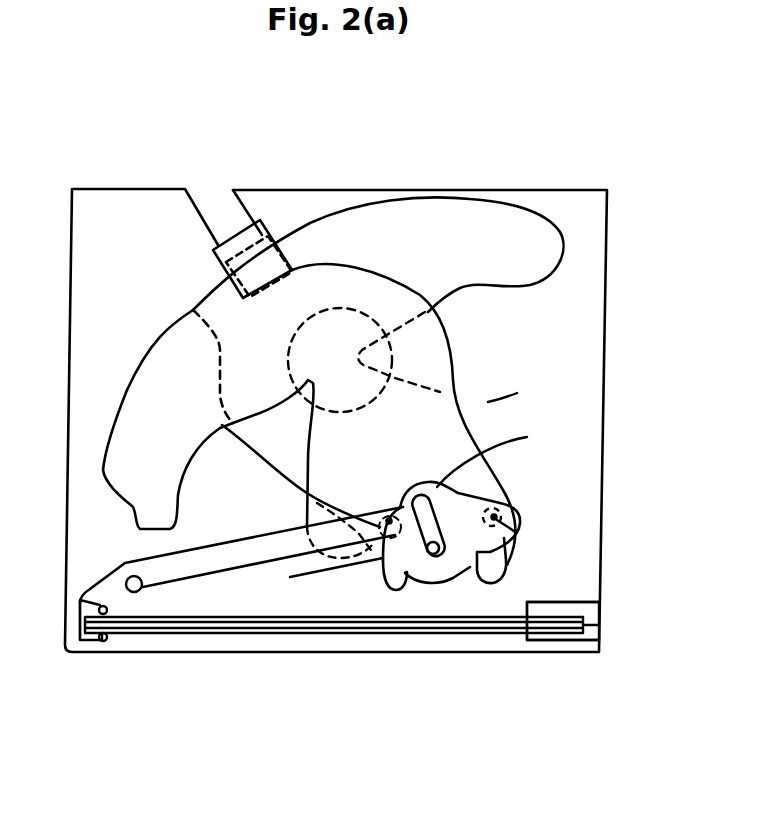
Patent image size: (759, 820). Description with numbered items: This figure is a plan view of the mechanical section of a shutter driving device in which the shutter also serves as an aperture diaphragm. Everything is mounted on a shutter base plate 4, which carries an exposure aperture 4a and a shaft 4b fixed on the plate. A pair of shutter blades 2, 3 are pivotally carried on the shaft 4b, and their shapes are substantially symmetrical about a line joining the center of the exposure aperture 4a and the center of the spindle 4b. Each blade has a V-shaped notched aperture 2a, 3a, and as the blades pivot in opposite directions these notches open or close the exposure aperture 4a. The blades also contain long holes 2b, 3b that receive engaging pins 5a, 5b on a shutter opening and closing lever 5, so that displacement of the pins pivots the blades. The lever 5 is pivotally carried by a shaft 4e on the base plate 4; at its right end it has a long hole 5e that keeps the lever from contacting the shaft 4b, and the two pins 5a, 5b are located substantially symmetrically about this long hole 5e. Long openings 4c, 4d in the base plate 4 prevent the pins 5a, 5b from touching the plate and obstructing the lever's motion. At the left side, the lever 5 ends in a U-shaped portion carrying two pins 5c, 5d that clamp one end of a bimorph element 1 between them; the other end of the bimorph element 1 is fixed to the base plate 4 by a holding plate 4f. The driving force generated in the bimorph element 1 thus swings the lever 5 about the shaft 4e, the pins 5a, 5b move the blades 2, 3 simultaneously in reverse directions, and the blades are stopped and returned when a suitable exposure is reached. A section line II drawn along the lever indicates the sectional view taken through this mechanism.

The bimorph element 1 is at (333, 640).
The shutter blade 2 is at (130, 503).
The V-shaped notched aperture 2a is at (305, 388).
The long hole 2b is at (497, 520).
The shutter blade 3 is at (555, 248).
The V-shaped notched aperture 3a is at (428, 312).
The long hole 3b is at (382, 557).
The shutter base plate 4 is at (237, 637).
The exposure aperture 4a is at (517, 393).
The shaft 4b is at (457, 570).
The long opening 4c is at (503, 583).
The long opening 4d is at (407, 590).
The shaft 4e is at (140, 590).
The holding plate 4f is at (590, 626).
The shutter opening and closing lever 5 is at (253, 570).
The engaging pin 5a is at (505, 518).
The engaging pin 5b is at (337, 517).
The pin 5c is at (78, 605).
The pin 5d is at (105, 641).
The long hole 5e is at (527, 437).
The section line II is at (633, 487).